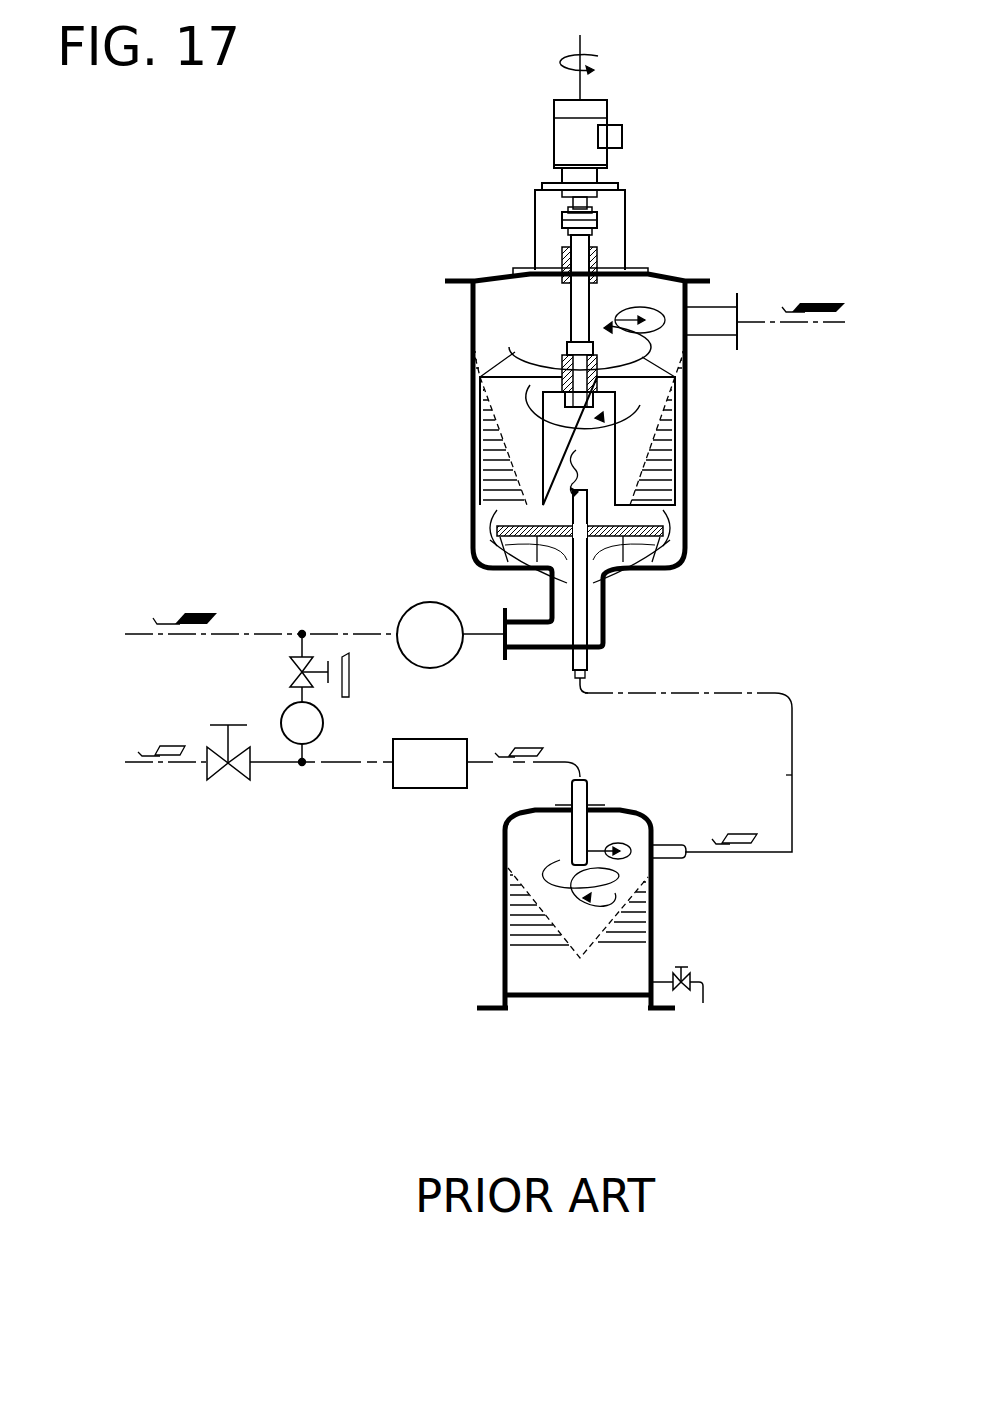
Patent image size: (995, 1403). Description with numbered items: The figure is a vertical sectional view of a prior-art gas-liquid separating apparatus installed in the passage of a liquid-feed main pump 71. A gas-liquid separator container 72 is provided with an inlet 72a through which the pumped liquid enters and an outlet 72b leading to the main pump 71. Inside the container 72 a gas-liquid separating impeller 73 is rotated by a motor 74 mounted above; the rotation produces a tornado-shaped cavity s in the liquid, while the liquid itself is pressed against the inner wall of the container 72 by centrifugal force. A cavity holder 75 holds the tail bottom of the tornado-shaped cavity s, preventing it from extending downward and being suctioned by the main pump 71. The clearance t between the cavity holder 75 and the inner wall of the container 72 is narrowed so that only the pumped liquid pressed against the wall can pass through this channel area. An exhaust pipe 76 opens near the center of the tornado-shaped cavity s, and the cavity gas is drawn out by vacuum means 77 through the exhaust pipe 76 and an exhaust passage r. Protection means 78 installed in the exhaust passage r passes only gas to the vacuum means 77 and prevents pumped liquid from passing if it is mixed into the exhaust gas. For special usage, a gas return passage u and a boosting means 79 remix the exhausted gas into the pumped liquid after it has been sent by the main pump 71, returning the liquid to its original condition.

The motor 74 is at (607, 112).
The inlet 72a is at (711, 318).
The gas-liquid separator container 72 is at (472, 398).
The outlet 72b is at (527, 632).
The gas-liquid separating impeller 73 is at (667, 472).
The tornado-shaped cavity s is at (502, 447).
The clearance t is at (672, 547).
The cavity holder 75 is at (643, 570).
The exhaust pipe 76 is at (603, 622).
The liquid-feed main pump 71 is at (403, 606).
The gas return passage u is at (302, 636).
The boosting means 79 is at (293, 742).
The vacuum means 77 is at (425, 789).
The exhaust passage r is at (795, 772).
The protection means 78 is at (653, 947).